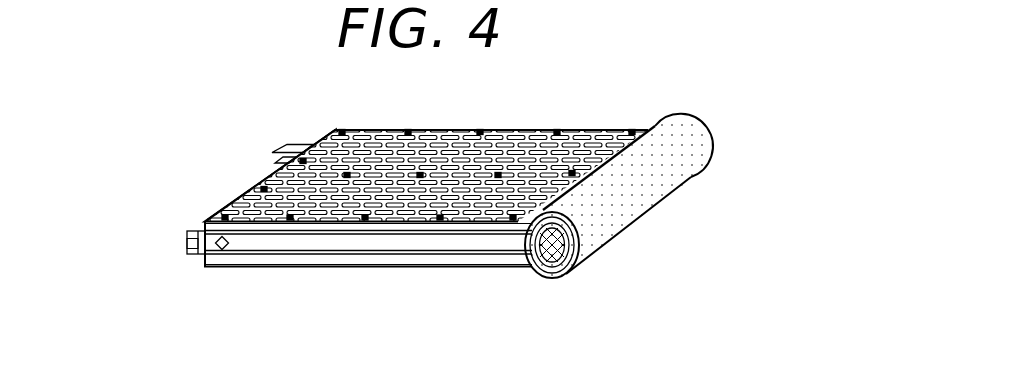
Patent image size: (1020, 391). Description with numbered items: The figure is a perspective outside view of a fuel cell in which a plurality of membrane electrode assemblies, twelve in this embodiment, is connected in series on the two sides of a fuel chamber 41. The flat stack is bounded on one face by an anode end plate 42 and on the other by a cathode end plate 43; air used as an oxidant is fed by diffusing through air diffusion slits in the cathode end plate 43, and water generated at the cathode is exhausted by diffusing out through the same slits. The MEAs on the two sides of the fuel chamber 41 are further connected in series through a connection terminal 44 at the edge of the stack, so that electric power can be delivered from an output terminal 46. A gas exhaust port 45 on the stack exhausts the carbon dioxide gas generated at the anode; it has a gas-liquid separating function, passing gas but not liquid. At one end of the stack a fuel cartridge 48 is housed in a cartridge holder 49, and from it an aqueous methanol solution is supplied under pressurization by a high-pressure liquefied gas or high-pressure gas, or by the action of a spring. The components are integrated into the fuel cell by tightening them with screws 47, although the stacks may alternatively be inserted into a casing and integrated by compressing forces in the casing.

The fuel chamber 41 is at (438, 243).
The anode end plate 42 is at (332, 234).
The cathode end plate 43 is at (205, 222).
The connection terminal 44 is at (201, 231).
The gas exhaust port 45 is at (223, 248).
The output terminal 46 is at (293, 144).
The screws 47 is at (575, 174).
The fuel cartridge 48 is at (563, 267).
The cartridge holder 49 is at (597, 223).